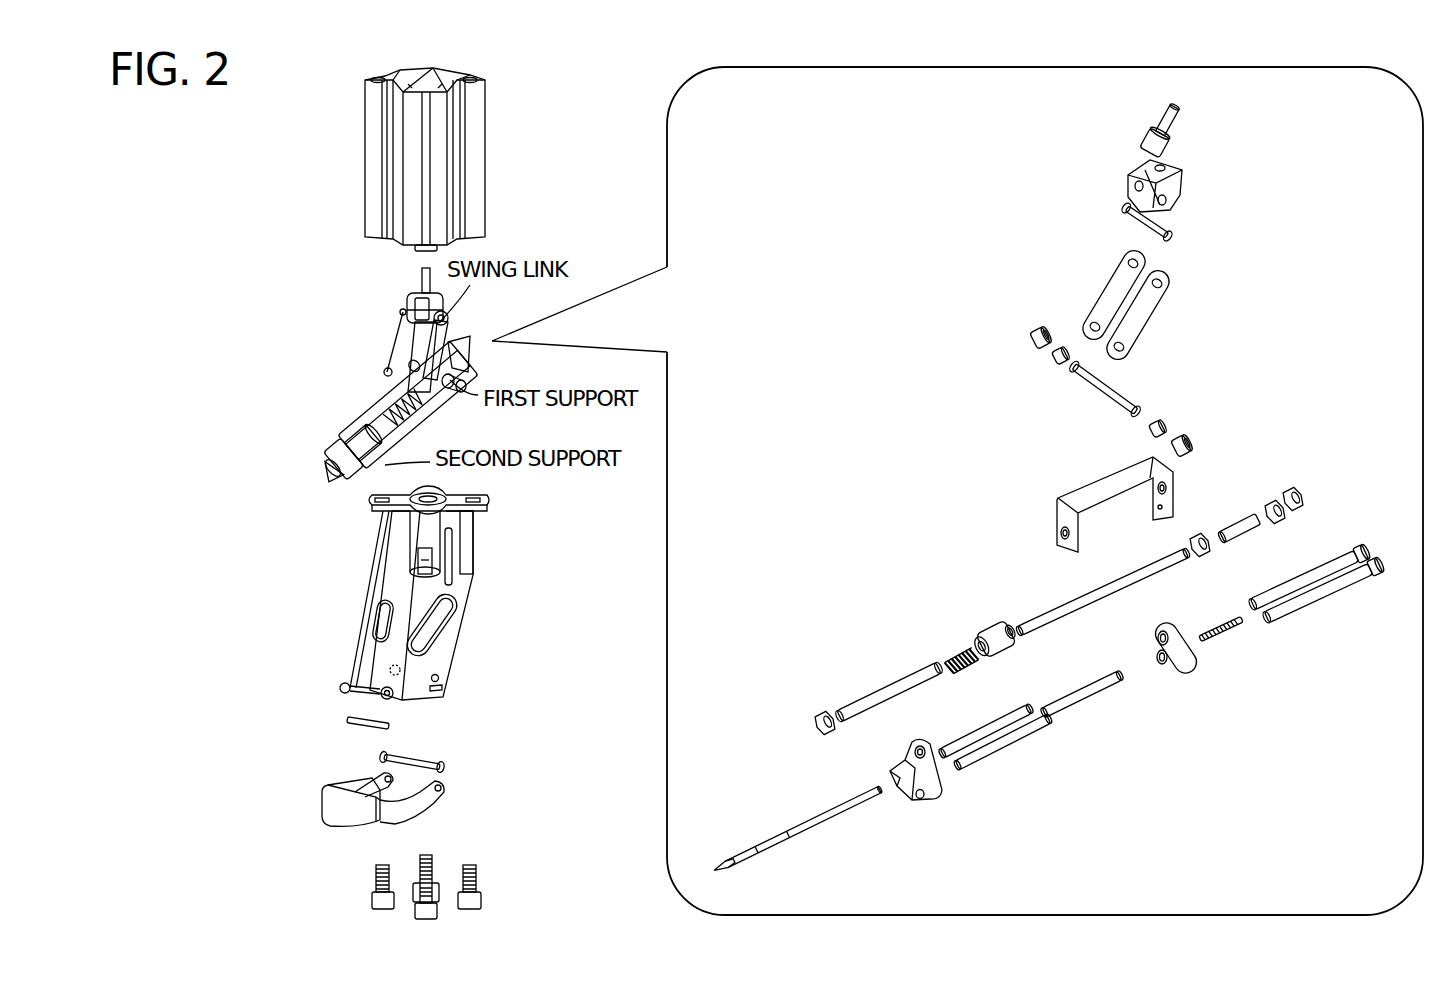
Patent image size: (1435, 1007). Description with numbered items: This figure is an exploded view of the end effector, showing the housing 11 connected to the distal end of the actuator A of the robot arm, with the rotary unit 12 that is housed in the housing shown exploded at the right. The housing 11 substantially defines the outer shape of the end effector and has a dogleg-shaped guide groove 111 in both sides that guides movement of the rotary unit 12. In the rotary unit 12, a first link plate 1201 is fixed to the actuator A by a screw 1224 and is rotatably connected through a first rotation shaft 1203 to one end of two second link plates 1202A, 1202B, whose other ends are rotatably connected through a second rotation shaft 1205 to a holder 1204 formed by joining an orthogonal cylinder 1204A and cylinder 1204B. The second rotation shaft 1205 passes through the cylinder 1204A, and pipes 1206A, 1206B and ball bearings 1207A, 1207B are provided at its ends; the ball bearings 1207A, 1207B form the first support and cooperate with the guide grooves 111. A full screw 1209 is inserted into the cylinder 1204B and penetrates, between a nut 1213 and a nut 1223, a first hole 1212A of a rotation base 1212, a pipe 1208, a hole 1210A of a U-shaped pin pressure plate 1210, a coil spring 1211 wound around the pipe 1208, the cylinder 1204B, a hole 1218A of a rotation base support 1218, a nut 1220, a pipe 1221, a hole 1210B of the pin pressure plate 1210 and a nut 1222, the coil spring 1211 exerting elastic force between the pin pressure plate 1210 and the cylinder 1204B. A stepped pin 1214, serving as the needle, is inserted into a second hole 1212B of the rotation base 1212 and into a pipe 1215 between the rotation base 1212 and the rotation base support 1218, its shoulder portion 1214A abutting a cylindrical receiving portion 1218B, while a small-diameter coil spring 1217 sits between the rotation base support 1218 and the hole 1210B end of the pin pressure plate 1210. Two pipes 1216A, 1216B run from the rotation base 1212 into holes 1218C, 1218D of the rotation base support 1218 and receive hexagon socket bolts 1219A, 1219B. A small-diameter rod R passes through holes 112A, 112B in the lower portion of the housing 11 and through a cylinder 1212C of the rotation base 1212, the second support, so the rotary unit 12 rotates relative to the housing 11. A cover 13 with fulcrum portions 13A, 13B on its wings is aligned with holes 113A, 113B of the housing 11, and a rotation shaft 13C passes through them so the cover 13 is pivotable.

The actuator A is at (378, 190).
The rotary unit 12 is at (400, 340).
The housing 11 is at (391, 609).
The guide groove 111 is at (450, 618).
The hole 112A is at (345, 686).
The hole 112B is at (393, 697).
The hole 113A is at (390, 670).
The hole 113B is at (440, 680).
The small-diameter rod R is at (345, 720).
The cover 13 is at (396, 795).
The fulcrum portion 13A is at (382, 777).
The fulcrum portion 13B is at (445, 792).
The rotation shaft 13C is at (445, 760).
The first link plate 1201 is at (1180, 195).
The second link plate 1202A is at (1112, 288).
The second link plate 1202B is at (1165, 303).
The first rotation shaft 1203 is at (1168, 240).
The holder 1204 is at (997, 614).
The cylinder 1204A is at (985, 622).
The cylinder 1204B is at (1003, 654).
The second rotation shaft 1205 is at (1136, 400).
The pipe 1206A is at (1053, 358).
The pipe 1206B is at (1178, 410).
The ball bearing 1207A is at (1032, 333).
The ball bearing 1207B is at (1190, 442).
The pipe 1208 is at (860, 705).
The full screw 1209 is at (1057, 612).
The pin pressure plate 1210 is at (1119, 489).
The hole 1210A is at (1060, 526).
The hole 1210B is at (1177, 486).
The coil spring 1211 is at (952, 652).
The rotation base 1212 is at (900, 804).
The first hole 1212A is at (915, 755).
The second hole 1212B is at (925, 800).
The cylinder 1212C is at (843, 774).
The nut 1213 is at (815, 718).
The stepped pin 1214 is at (802, 849).
The shoulder portion 1214A is at (838, 812).
The pipe 1215 is at (1100, 700).
The pipe 1216A is at (992, 730).
The pipe 1216B is at (1032, 737).
The small-diameter coil spring 1217 is at (1235, 630).
The rotation base support 1218 is at (1163, 663).
The hole 1218A is at (1158, 633).
The cylindrical receiving portion 1218B is at (1165, 665).
The hole 1218C is at (1155, 655).
The hole 1218D is at (1185, 660).
The hexagon socket bolt 1219A is at (1283, 615).
The hexagon socket bolt 1219B is at (1343, 590).
The nut 1220 is at (1195, 545).
The pipe 1221 is at (1246, 530).
The nut 1222 is at (1283, 514).
The nut 1223 is at (1295, 493).
The screw 1224 is at (1178, 117).